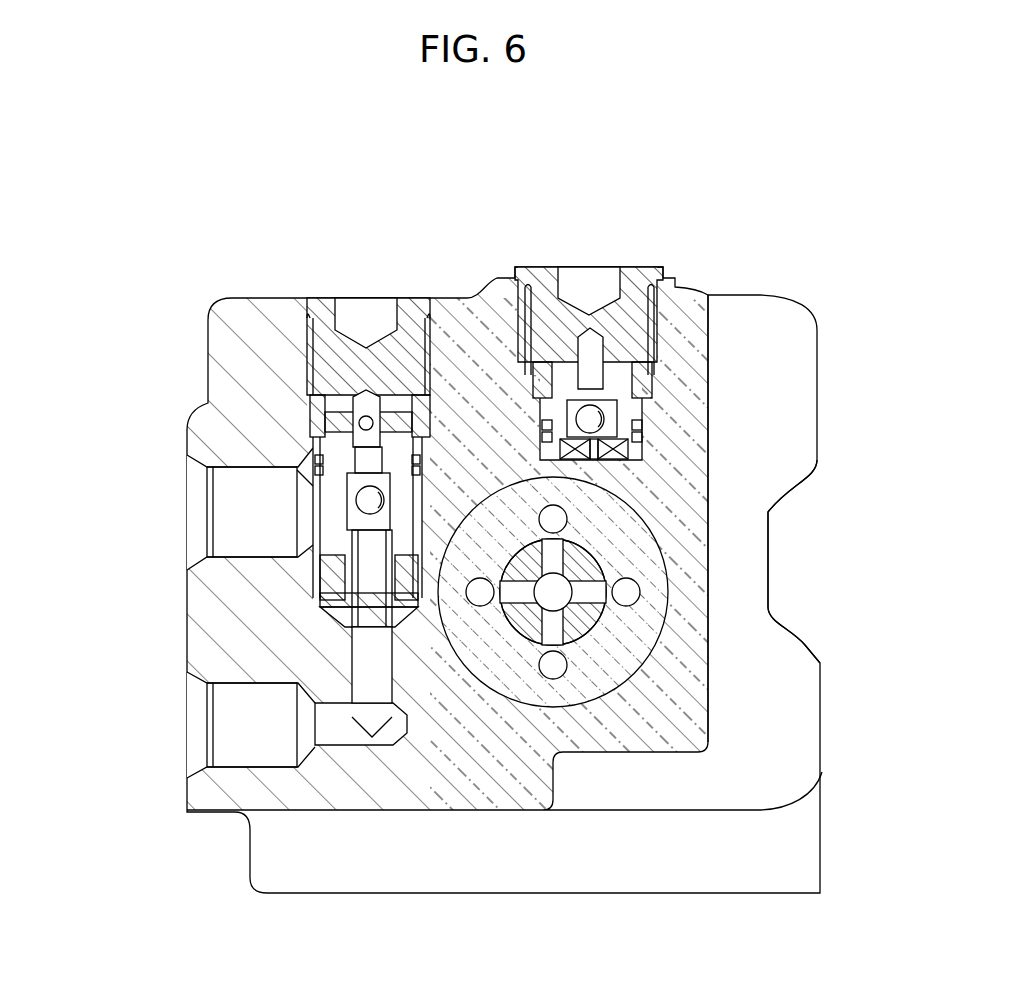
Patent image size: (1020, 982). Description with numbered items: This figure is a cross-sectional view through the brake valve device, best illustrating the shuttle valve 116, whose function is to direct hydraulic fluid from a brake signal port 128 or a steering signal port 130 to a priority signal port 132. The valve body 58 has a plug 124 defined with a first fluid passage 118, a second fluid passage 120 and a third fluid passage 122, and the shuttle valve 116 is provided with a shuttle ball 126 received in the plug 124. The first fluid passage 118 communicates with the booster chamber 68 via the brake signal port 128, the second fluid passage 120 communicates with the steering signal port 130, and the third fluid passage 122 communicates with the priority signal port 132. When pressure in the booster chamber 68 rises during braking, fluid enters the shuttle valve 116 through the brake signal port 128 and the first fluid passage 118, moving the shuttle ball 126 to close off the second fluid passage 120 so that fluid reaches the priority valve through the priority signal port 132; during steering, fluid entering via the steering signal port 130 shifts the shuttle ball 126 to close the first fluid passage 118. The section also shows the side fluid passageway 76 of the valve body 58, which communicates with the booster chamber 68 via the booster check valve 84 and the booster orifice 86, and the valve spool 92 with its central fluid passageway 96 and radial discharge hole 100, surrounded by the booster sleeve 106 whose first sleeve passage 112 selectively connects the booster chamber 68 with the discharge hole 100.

The shuttle valve 116 is at (270, 462).
The plug 124 is at (320, 318).
The brake signal port 128 is at (455, 437).
The first fluid passage 118 is at (323, 447).
The third fluid passage 122 is at (320, 466).
The priority signal port 132 is at (197, 513).
The shuttle ball 126 is at (356, 500).
The second fluid passage 120 is at (365, 552).
The steering signal port 130 is at (197, 722).
The side fluid passageway 76 is at (710, 367).
The booster check valve 84 is at (607, 419).
The booster orifice 86 is at (642, 444).
The booster chamber 68 is at (628, 482).
The valve body 58 is at (690, 528).
The central fluid passageway 96 is at (600, 578).
The discharge hole 100 is at (560, 586).
The valve spool 92 is at (667, 718).
The booster sleeve 106 is at (503, 683).
The first sleeve passage 112 is at (553, 672).